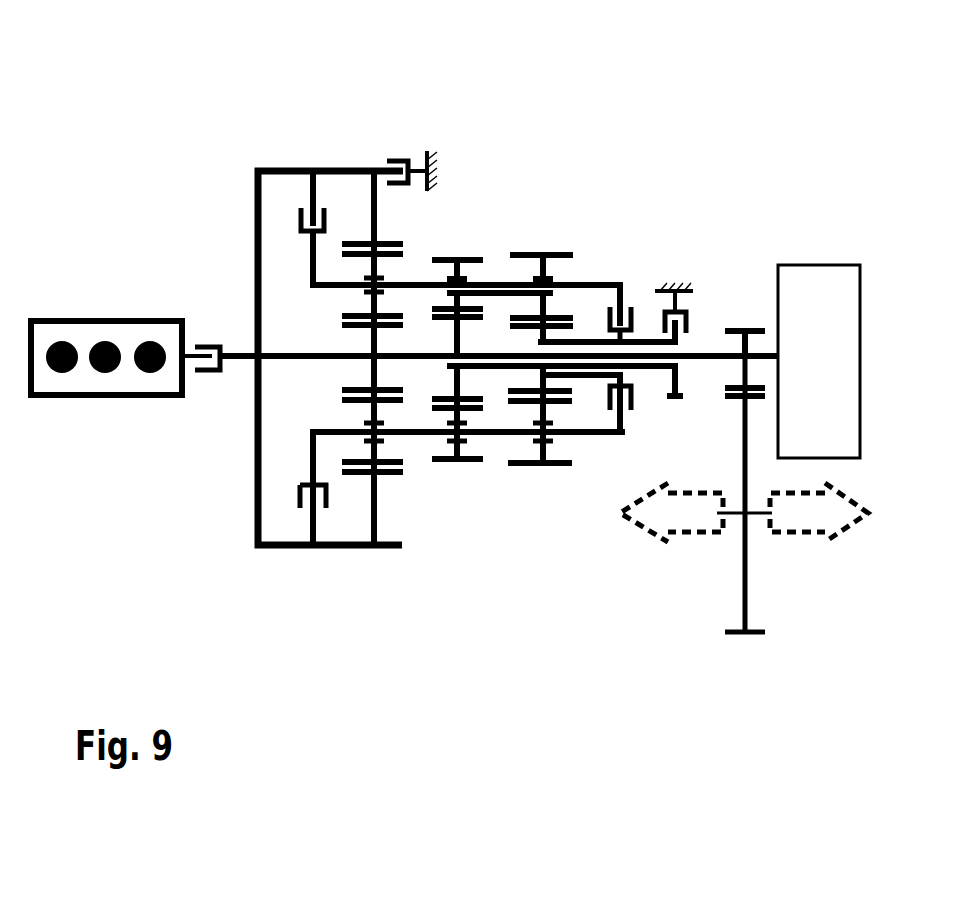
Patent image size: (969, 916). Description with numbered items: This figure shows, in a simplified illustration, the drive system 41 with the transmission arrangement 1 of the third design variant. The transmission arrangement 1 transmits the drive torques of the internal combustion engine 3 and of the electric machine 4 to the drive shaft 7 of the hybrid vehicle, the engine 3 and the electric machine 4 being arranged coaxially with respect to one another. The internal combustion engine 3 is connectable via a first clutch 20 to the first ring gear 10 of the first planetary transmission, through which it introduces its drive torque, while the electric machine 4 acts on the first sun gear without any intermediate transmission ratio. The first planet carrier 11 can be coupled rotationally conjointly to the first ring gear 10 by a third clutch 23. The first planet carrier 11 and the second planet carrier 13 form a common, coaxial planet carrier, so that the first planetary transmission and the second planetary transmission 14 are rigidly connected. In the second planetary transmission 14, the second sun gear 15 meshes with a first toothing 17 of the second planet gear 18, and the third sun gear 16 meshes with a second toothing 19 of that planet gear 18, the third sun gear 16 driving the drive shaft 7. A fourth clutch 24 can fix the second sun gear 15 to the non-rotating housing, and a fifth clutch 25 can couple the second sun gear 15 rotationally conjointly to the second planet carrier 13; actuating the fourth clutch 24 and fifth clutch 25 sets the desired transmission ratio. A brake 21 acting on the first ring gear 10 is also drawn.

The transmission arrangement 1 is at (738, 138).
The internal combustion engine 3 is at (63, 378).
The electric machine 4 is at (808, 280).
The drive shaft 7 is at (798, 510).
The first ring gear 10 is at (253, 201).
The first planet carrier 11 is at (405, 283).
The second planet carrier 13 is at (578, 282).
The second planetary transmission 14 is at (636, 256).
The second sun gear 15 is at (555, 378).
The third sun gear 16 is at (458, 397).
The first toothing 17 is at (442, 460).
The second planet gear 18 is at (505, 443).
The second toothing 19 is at (558, 468).
The first clutch 20 is at (200, 343).
The brake 21 is at (403, 160).
The third clutch 23 is at (322, 210).
The fourth clutch 24 is at (690, 322).
The fifth clutch 25 is at (640, 306).
The drive system 41 is at (668, 99).